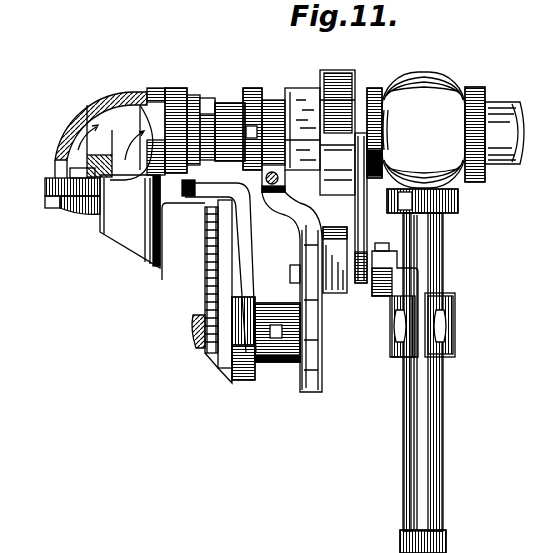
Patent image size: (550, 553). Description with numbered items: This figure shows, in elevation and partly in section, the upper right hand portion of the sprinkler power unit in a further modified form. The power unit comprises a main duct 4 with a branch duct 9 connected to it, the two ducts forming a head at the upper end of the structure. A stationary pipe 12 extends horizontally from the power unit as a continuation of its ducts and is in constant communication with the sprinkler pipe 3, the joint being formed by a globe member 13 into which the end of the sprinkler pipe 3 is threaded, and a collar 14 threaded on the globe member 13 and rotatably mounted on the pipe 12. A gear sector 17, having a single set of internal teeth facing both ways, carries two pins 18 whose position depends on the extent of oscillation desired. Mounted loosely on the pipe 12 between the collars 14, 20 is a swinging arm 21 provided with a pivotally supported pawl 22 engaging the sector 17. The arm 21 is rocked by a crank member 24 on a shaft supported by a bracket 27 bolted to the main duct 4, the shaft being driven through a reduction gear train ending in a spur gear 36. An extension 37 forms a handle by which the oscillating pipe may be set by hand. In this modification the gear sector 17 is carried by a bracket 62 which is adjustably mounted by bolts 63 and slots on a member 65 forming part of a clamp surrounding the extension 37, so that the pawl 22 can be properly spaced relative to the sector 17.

The sprinkler pipe 3 is at (508, 102).
The main duct 4 is at (102, 218).
The branch duct 9 is at (56, 122).
The stationary pipe 12 is at (228, 104).
The globe member 13 is at (441, 88).
The collar 14 is at (338, 80).
The gear sector 17 is at (355, 207).
The pins 18 is at (383, 153).
The collar 20 is at (258, 90).
The swinging arm 21 is at (300, 245).
The pawl 22 is at (335, 283).
The crank member 24 is at (288, 366).
The bracket 27 is at (244, 297).
The spur gear 36 is at (205, 243).
The extension 37 is at (444, 401).
The bracket 62 is at (390, 262).
The bolts 63 is at (382, 243).
The member 65 is at (396, 348).